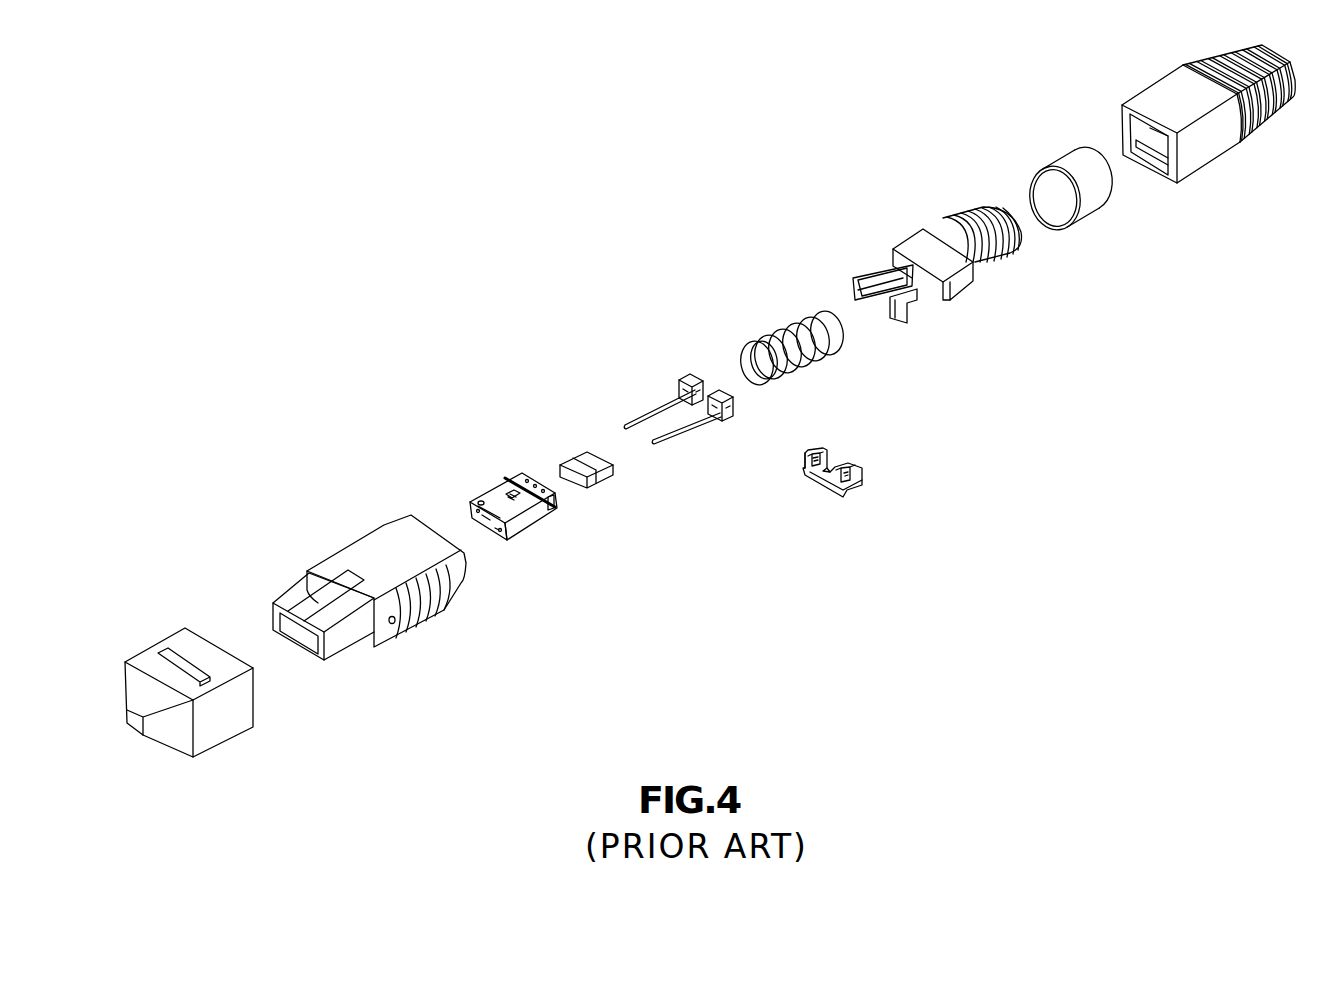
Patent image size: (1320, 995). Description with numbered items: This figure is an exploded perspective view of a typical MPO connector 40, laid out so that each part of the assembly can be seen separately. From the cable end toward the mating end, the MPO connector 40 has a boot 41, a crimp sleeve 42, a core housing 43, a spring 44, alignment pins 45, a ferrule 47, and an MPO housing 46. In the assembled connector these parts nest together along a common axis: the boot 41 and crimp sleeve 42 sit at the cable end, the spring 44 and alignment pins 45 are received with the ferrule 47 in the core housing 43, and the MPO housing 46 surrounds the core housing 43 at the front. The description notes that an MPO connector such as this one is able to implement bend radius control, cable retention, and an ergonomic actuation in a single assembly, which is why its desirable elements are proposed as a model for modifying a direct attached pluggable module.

The MPO connector 40 is at (505, 196).
The boot 41 is at (1155, 82).
The crimp sleeve 42 is at (1031, 168).
The core housing 43 is at (912, 238).
The spring 44 is at (780, 330).
The alignment pins 45 is at (803, 457).
The MPO housing 46 is at (412, 625).
The ferrule 47 is at (567, 463).